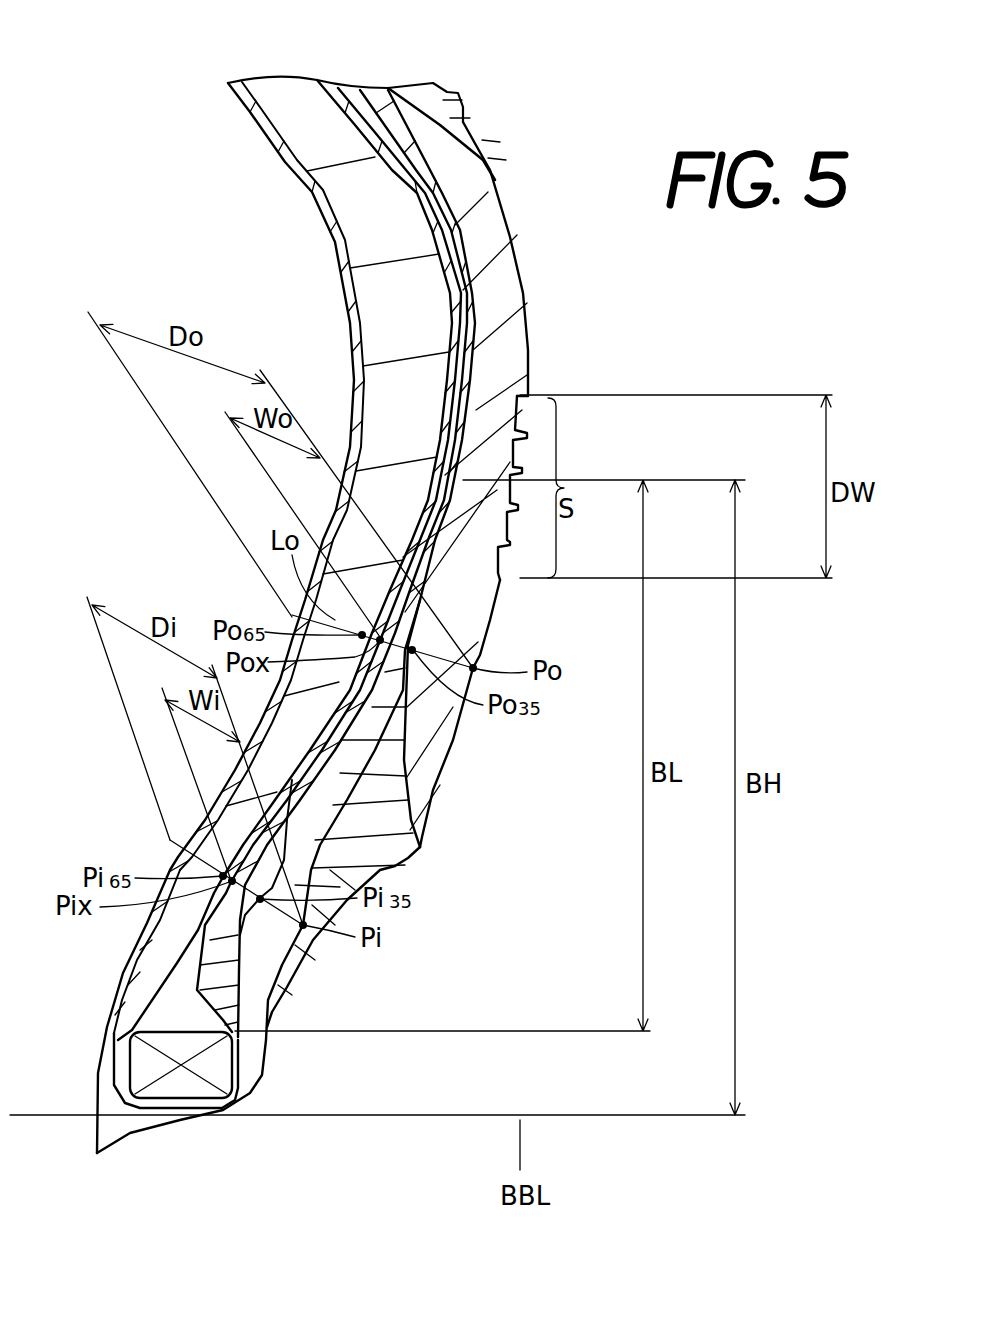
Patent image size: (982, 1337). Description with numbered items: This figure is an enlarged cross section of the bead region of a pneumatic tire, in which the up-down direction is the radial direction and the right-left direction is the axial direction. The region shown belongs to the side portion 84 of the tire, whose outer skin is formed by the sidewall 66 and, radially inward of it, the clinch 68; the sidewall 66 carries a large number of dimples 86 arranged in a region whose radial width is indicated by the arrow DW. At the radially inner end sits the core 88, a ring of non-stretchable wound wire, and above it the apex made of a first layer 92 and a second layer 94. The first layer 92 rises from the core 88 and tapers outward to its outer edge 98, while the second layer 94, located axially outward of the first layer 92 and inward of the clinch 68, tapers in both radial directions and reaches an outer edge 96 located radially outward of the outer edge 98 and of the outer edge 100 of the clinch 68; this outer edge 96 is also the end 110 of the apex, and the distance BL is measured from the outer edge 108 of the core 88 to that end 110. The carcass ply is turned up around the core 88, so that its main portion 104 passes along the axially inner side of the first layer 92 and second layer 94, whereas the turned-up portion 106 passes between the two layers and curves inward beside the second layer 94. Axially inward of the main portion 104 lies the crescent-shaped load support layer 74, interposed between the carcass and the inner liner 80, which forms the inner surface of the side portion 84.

The side portion 84 is at (212, 53).
The inner liner 80 is at (290, 152).
The load support layer 74 is at (343, 190).
The main portion 104 is at (433, 230).
The outer edge of the second layer 96 is at (440, 473).
The end of the apex 110 is at (424, 347).
The turned-up portion 106 is at (455, 250).
The sidewall 66 is at (473, 183).
The dimples 86 is at (545, 412).
The outer edge of the clinch 100 is at (455, 640).
The clinch 68 is at (418, 855).
The second layer 94 is at (253, 953).
The core 88 is at (188, 1090).
The outer edge of the core 108 is at (175, 1025).
The first layer 92 is at (177, 982).
The outer edge of the first layer 98 is at (160, 928).